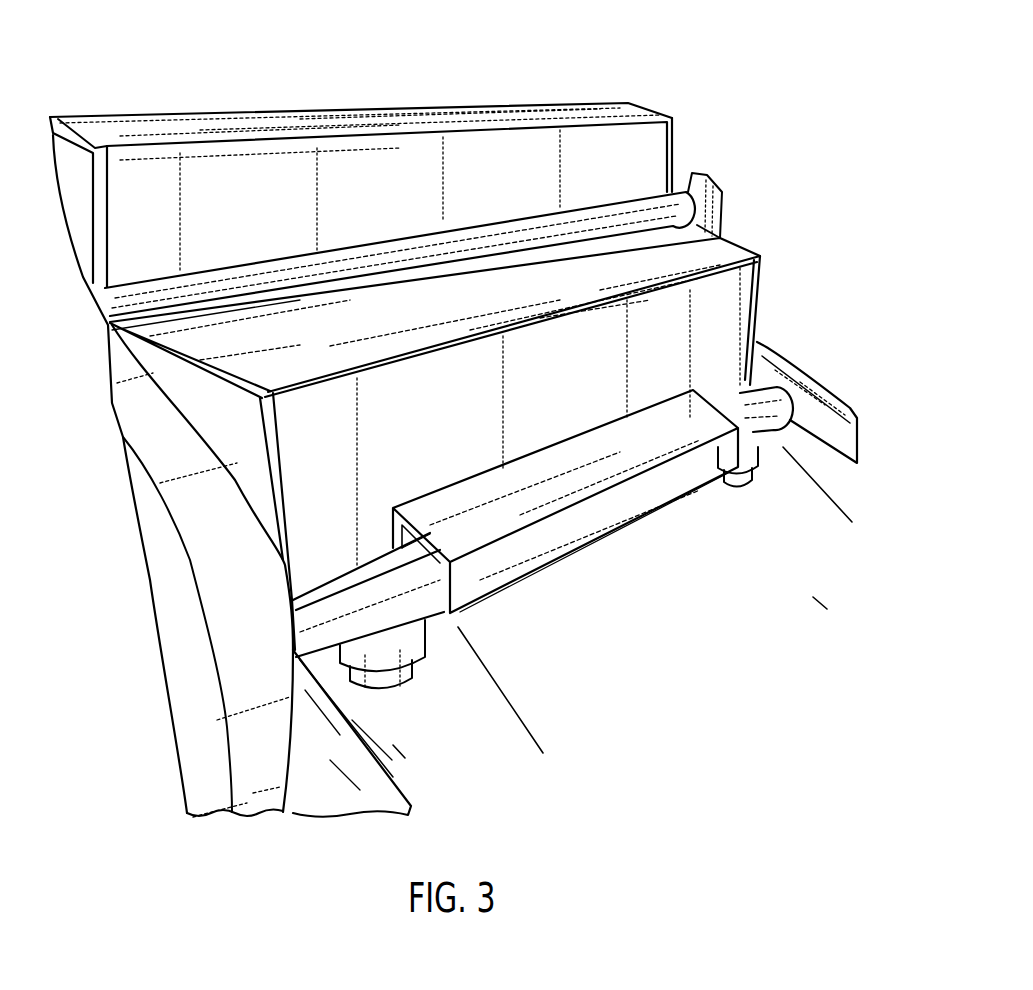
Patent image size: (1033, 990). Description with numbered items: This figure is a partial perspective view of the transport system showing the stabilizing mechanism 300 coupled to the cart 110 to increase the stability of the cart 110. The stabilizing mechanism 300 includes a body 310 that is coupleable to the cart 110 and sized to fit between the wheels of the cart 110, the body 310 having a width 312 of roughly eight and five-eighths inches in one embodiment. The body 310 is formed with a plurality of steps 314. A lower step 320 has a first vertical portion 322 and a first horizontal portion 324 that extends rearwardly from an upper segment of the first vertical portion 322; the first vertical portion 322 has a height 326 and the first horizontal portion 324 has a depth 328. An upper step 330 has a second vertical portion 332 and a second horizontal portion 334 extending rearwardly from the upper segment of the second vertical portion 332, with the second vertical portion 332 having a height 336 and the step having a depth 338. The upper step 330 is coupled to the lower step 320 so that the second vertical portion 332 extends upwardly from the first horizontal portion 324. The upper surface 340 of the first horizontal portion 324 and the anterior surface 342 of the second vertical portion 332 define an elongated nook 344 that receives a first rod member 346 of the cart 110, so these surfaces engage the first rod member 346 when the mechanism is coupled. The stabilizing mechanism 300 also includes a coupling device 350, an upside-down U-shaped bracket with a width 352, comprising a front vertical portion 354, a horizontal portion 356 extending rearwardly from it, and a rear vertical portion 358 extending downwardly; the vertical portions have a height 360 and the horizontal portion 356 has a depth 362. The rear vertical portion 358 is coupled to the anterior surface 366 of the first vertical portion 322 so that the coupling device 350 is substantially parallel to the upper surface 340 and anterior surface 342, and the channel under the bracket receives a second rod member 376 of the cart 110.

The cart 110 is at (150, 597).
The stabilizing mechanism 300 is at (133, 96).
The body 310 is at (616, 90).
The width 312 is at (400, 752).
The steps 314 is at (731, 229).
The lower step 320 is at (754, 310).
The first vertical portion 322 is at (720, 350).
The first horizontal portion 324 is at (367, 357).
The height 326 is at (682, 430).
The depth 328 is at (313, 375).
The upper step 330 is at (333, 117).
The second vertical portion 332 is at (405, 150).
The second horizontal portion 334 is at (205, 115).
The height 336 is at (212, 287).
The depth 338 is at (168, 142).
The upper surface 340 is at (380, 341).
The anterior surface 342 is at (387, 215).
The elongated nook 344 is at (578, 197).
The first rod member 346 is at (478, 256).
The coupling device 350 is at (692, 509).
The width 352 is at (813, 603).
The front vertical portion 354 is at (497, 583).
The horizontal portion 356 is at (533, 497).
The rear vertical portion 358 is at (392, 532).
The height 360 is at (660, 504).
The depth 362 is at (604, 421).
The anterior surface 366 is at (545, 419).
The second rod member 376 is at (421, 570).